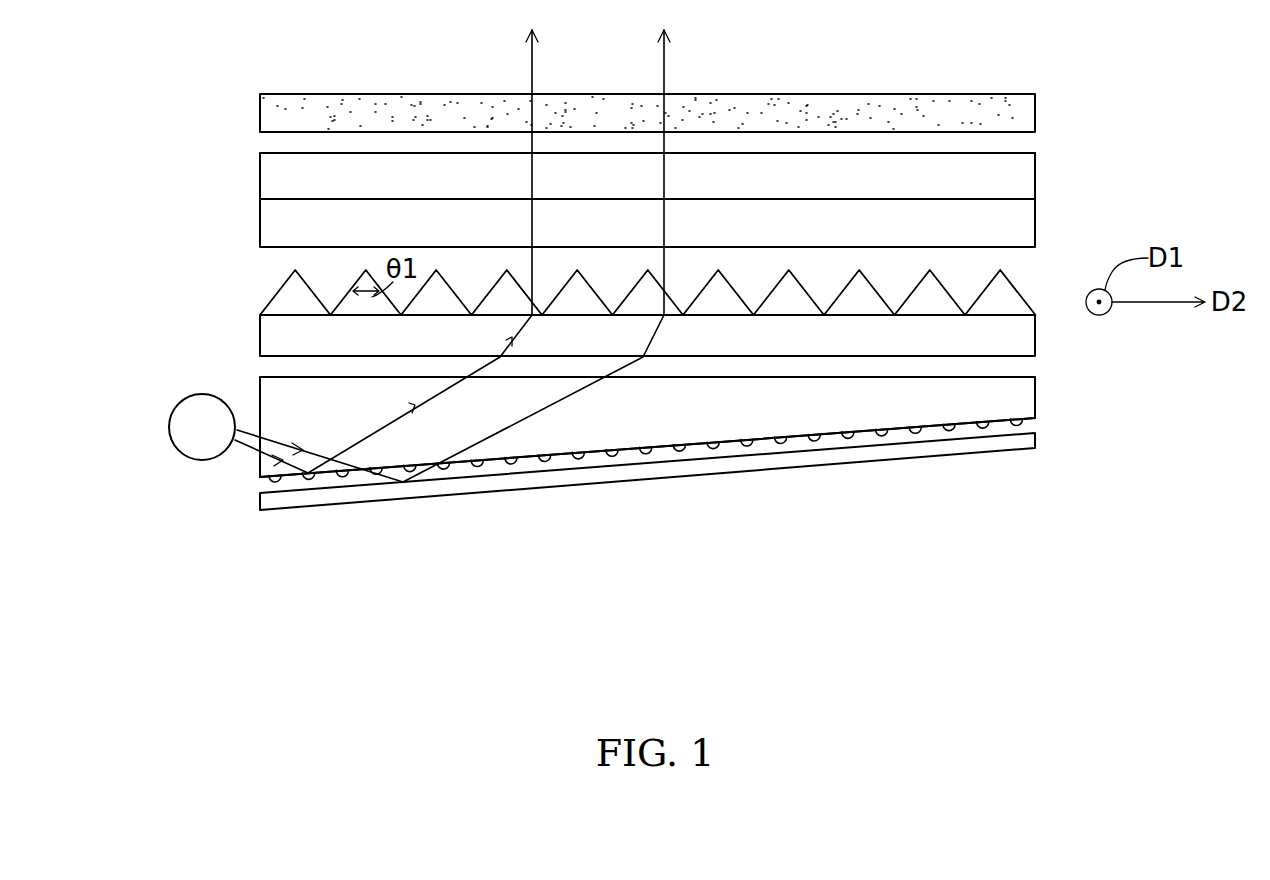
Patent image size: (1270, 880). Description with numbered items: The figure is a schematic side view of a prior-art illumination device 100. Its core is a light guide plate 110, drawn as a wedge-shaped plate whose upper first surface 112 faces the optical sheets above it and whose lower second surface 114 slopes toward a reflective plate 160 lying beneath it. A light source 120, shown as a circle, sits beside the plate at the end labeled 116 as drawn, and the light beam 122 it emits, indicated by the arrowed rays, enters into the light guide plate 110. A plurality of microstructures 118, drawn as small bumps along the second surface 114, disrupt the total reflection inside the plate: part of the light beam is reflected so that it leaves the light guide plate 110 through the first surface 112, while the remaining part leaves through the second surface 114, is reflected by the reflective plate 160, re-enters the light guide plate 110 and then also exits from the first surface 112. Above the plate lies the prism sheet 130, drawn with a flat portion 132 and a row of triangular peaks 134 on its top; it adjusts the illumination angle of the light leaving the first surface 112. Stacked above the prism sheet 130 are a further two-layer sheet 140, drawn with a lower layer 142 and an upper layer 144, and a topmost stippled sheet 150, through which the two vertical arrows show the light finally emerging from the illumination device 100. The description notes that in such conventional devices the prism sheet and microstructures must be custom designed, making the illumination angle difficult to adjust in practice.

The illumination device 100 is at (1163, 520).
The light guide plate 110 is at (636, 448).
The first surface 112 is at (1009, 372).
The second surface 114 is at (1008, 431).
The light incident surface 116 is at (246, 399).
The microstructures 118 is at (615, 452).
The light source 120 is at (182, 430).
The light beam 122 is at (243, 441).
The prism sheet 130 is at (562, 298).
The substrate of prism sheet 132 is at (272, 338).
The prism structures 134 is at (278, 290).
The optical film 140 is at (725, 196).
The base layer 142 is at (1020, 231).
The diffusion layer 144 is at (1020, 172).
The diffuser plate 150 is at (267, 113).
The reflective plate 160 is at (908, 455).